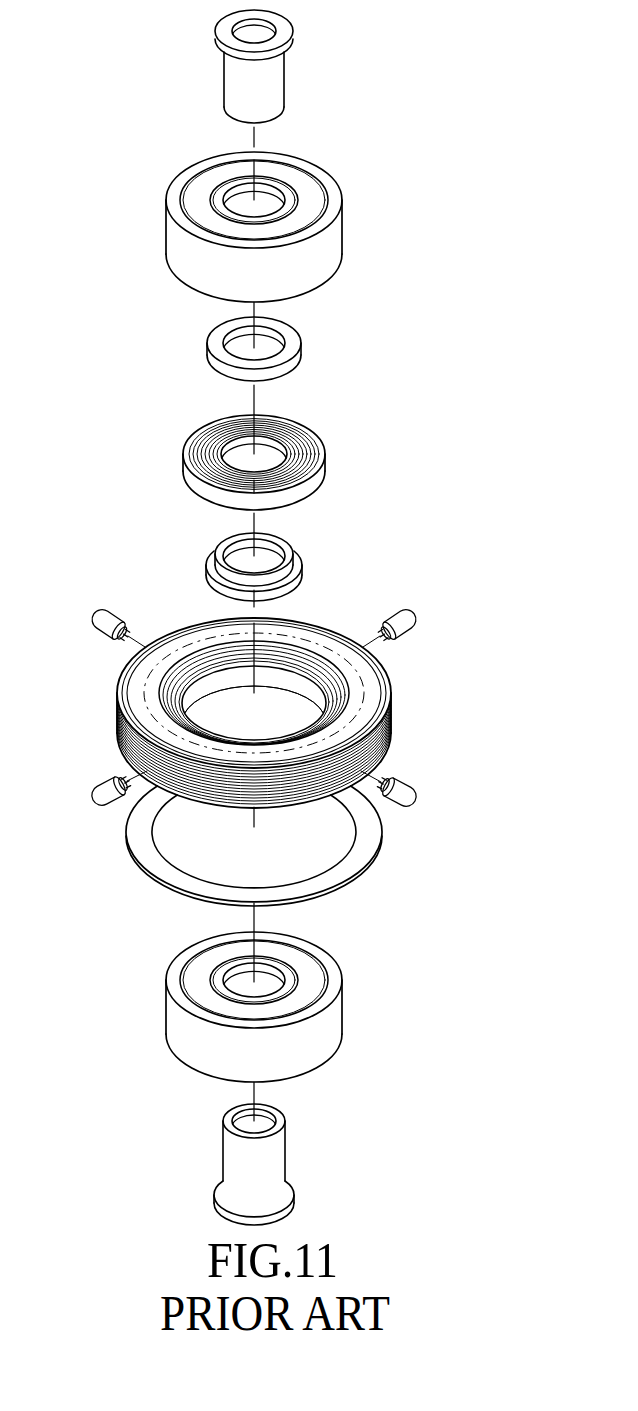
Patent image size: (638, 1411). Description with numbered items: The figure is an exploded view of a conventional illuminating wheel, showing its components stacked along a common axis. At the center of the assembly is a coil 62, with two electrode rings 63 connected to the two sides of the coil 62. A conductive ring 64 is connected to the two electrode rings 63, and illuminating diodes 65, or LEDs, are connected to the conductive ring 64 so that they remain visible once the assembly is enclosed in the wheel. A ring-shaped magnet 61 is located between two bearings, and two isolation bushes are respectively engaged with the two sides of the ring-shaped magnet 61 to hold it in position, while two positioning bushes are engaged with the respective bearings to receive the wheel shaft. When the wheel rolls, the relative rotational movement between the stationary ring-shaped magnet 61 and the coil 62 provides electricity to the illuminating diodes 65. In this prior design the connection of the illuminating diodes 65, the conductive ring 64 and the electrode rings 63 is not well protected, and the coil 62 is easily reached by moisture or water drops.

The ring-shaped magnet 61 is at (318, 462).
The coil 62 is at (216, 674).
The electrode rings 63 is at (197, 640).
The conductive ring 64 is at (137, 842).
The illuminating diodes 65 is at (421, 612).